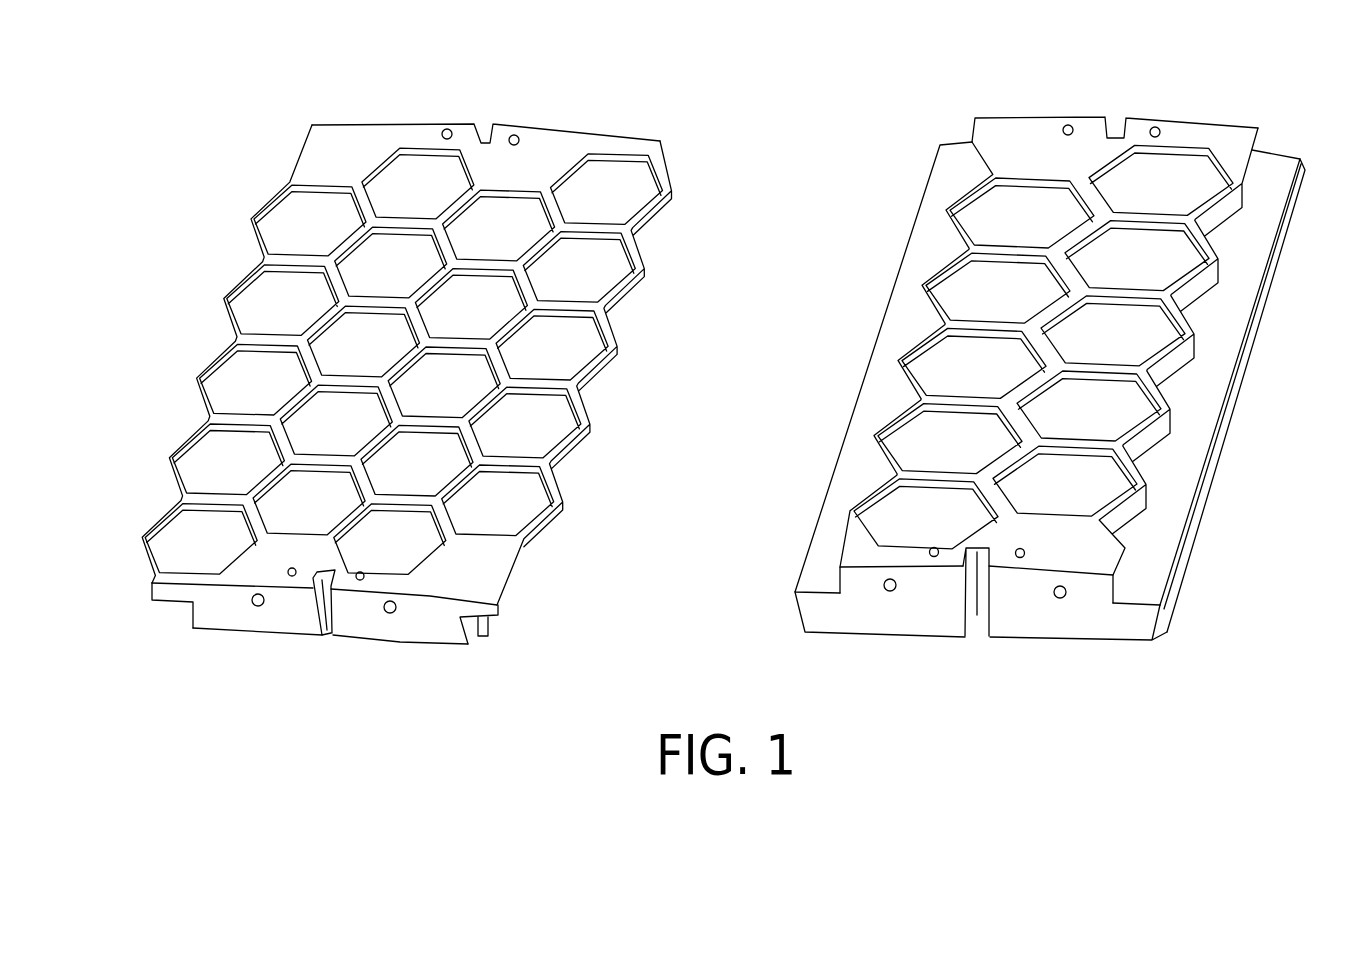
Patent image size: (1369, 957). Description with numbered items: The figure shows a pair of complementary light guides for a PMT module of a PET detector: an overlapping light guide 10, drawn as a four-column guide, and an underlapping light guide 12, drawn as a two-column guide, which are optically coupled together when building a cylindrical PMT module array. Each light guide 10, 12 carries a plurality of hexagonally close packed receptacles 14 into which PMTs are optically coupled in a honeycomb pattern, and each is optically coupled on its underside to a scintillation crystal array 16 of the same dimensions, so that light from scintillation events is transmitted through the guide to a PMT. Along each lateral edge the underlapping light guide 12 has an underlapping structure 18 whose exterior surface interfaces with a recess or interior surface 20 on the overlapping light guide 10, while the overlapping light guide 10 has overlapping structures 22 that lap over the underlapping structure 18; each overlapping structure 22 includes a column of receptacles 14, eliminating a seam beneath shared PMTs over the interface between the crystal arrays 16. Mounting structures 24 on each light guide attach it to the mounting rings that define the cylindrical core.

The overlapping light guide 10 is at (204, 127).
The underlapping light guide 12 is at (855, 118).
The receptacle 14 is at (283, 232).
The scintillation crystal array 16 is at (493, 626).
The underlapping structure 18 is at (910, 308).
The interior surface 20 is at (182, 613).
The overlapping structure 22 is at (481, 584).
The mounting structure 24 is at (258, 606).